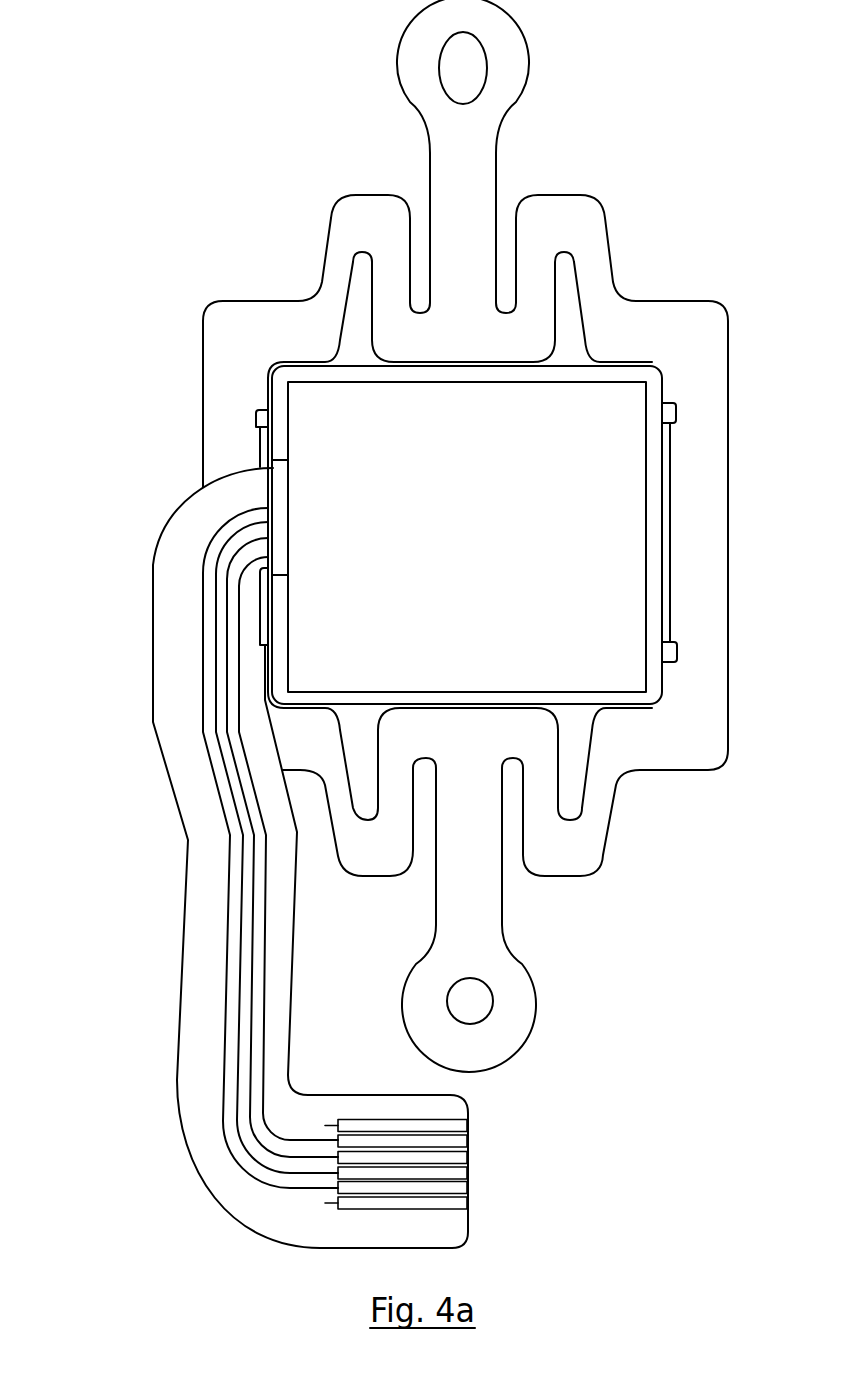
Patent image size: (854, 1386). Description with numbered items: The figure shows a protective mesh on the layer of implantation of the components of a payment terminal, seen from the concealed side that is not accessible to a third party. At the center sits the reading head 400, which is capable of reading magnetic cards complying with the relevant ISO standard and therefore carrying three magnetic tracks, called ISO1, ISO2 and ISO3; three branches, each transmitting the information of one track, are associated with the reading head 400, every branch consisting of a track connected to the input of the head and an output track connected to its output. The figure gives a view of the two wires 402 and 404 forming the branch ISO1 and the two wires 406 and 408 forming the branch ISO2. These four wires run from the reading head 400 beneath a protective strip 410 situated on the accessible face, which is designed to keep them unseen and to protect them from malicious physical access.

The reading head 400 is at (282, 385).
The protective strip 410 is at (178, 605).
The wire 402 is at (215, 782).
The wire 404 is at (243, 850).
The wire 406 is at (252, 947).
The wire 408 is at (262, 1118).